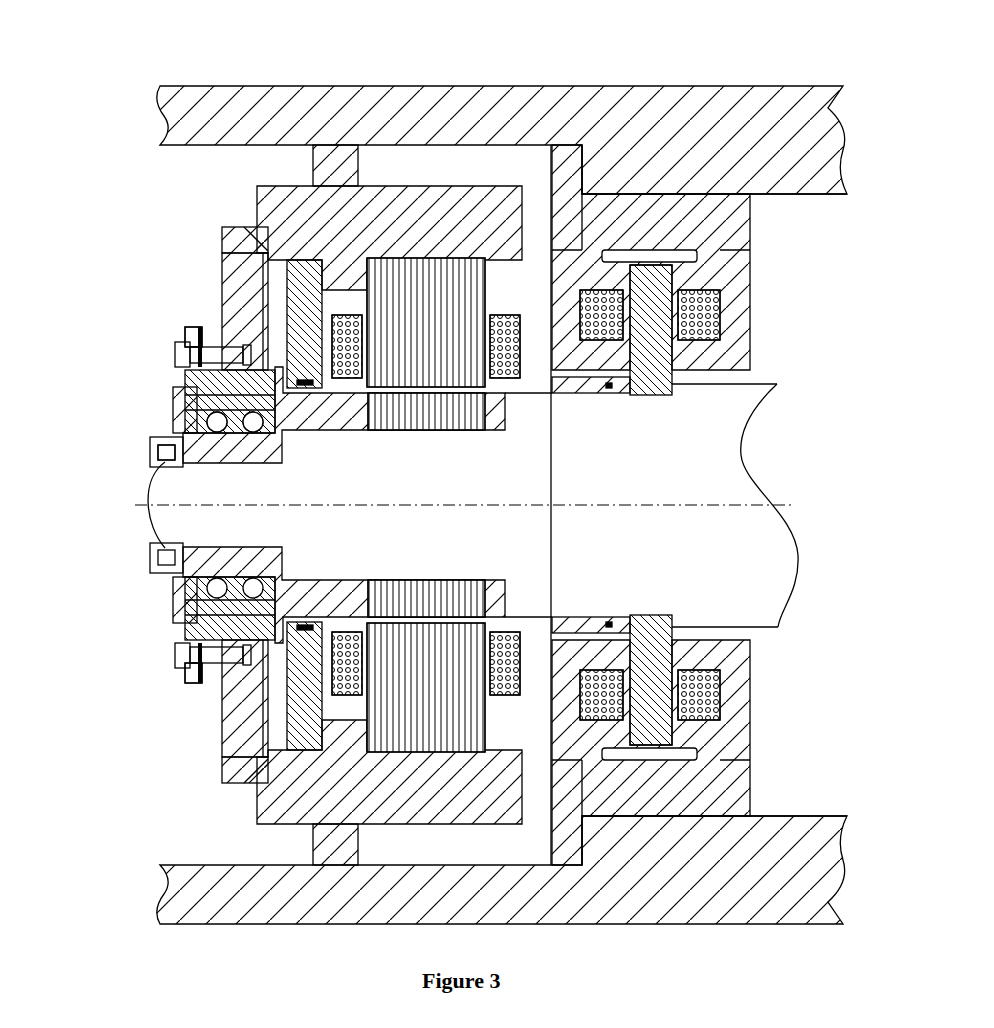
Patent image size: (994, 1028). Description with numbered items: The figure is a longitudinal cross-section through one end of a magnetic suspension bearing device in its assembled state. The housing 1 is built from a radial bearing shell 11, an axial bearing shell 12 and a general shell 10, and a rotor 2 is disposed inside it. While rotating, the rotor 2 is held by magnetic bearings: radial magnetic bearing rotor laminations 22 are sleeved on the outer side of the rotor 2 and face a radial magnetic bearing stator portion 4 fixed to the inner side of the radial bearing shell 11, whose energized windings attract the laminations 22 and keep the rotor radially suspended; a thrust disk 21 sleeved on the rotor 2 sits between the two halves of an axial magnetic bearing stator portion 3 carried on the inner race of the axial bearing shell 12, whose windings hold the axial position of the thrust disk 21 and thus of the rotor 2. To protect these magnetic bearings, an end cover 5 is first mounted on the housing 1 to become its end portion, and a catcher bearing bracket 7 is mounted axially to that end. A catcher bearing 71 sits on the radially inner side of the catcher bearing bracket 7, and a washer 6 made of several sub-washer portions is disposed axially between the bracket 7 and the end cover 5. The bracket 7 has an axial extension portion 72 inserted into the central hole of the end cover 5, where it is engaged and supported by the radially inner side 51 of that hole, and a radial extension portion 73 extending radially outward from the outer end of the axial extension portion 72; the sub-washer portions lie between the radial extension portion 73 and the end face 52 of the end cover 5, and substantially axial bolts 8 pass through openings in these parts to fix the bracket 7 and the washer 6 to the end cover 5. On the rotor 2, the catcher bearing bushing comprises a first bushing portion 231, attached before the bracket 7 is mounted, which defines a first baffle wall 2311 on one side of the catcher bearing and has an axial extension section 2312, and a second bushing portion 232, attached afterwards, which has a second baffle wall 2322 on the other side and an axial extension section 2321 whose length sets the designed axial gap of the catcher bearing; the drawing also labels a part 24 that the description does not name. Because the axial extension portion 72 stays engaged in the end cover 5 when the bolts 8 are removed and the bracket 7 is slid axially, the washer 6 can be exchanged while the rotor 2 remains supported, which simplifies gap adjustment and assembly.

The housing 1 is at (567, 113).
The general shell 10 is at (653, 112).
The radial bearing shell 11 is at (345, 168).
The axial bearing shell 12 is at (673, 210).
The rotor 2 is at (158, 468).
The thrust disk 21 is at (722, 312).
The radial magnetic bearing rotor laminations 22 is at (432, 428).
The axial magnetic bearing stator portion 3 is at (722, 290).
The radial magnetic bearing stator portion 4 is at (437, 320).
The end cover 5 is at (221, 257).
The radially inner side of the central hole 51 is at (220, 752).
The end face of the end of the housing 52 is at (203, 683).
The washer 6 is at (193, 640).
The catcher bearing bracket 7 is at (178, 610).
The catcher bearing 71 is at (165, 555).
The axial extension portion 72 is at (225, 640).
The radial extension portion 73 is at (198, 680).
The bolts 8 is at (186, 670).
The first bushing portion 231 is at (200, 375).
The first baffle wall 2311 is at (200, 327).
The axial extension section 2312 is at (190, 345).
The second bushing portion 232 is at (215, 400).
The axial extension section 2321 is at (165, 452).
The second baffle wall 2322 is at (160, 478).
The spacer ring 24 is at (176, 403).